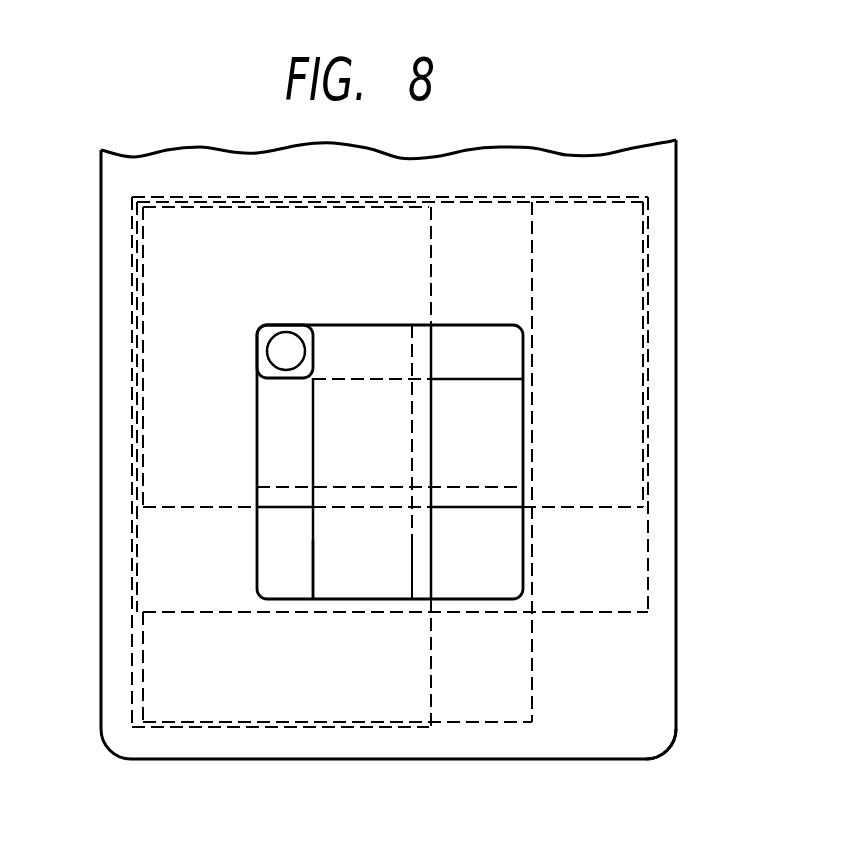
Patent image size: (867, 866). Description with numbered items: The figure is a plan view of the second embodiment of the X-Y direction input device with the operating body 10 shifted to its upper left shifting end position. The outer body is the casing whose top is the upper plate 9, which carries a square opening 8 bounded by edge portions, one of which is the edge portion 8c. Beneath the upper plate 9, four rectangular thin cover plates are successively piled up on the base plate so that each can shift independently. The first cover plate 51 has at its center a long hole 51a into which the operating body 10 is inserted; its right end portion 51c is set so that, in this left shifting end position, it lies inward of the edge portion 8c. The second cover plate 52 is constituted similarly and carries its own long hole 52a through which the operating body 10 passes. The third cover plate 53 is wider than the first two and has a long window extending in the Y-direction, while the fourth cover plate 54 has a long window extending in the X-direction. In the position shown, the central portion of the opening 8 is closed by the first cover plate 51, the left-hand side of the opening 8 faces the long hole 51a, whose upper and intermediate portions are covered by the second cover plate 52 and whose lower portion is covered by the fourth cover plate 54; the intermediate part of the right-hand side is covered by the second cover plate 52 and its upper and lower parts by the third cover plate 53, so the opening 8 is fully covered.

The square opening 8 is at (515, 575).
The edge portion 8c is at (523, 393).
The upper plate 9 is at (660, 717).
The operating body 10 is at (257, 357).
The first cover plate 51 is at (358, 577).
The long hole 51a is at (303, 553).
The right end portion 51c is at (422, 590).
The second cover plate 52 is at (277, 447).
The long hole 52a is at (480, 373).
The third cover plate 53 is at (510, 340).
The fourth cover plate 54 is at (628, 549).